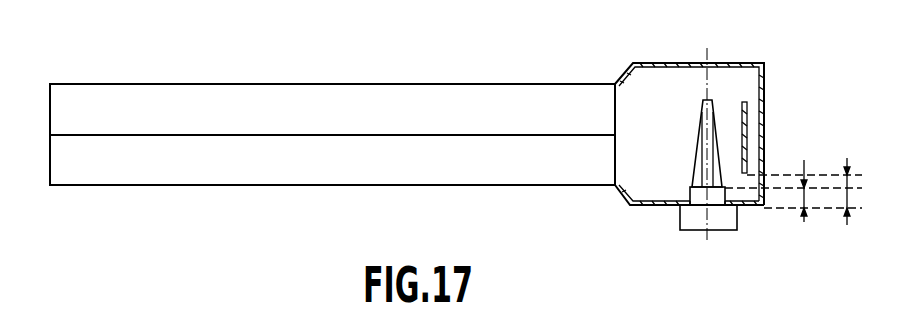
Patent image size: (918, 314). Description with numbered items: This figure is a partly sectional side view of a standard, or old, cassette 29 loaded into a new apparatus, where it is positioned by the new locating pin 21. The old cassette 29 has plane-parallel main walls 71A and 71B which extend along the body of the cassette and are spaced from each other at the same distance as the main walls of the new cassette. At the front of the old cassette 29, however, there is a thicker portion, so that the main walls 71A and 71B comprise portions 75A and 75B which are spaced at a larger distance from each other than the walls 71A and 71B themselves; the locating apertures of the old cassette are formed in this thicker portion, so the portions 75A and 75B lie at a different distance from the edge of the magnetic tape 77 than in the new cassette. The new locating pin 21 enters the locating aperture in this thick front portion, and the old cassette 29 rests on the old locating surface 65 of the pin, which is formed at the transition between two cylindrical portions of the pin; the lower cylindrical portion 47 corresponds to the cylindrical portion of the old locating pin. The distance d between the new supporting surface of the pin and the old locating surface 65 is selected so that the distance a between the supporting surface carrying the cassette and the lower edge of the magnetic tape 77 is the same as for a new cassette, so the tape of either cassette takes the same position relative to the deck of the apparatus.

The old cassette 29 is at (199, 84).
The main wall 71A is at (409, 84).
The main wall 71B is at (408, 190).
The portion of main wall 75A is at (733, 62).
The portion of main wall 75B is at (663, 213).
The new locating pin 21 is at (719, 155).
The magnetic tape 77 is at (745, 120).
The old locating surface 65 is at (697, 202).
The cylindrical portion 47 is at (728, 217).
The distance d is at (811, 191).
The distance a is at (854, 191).